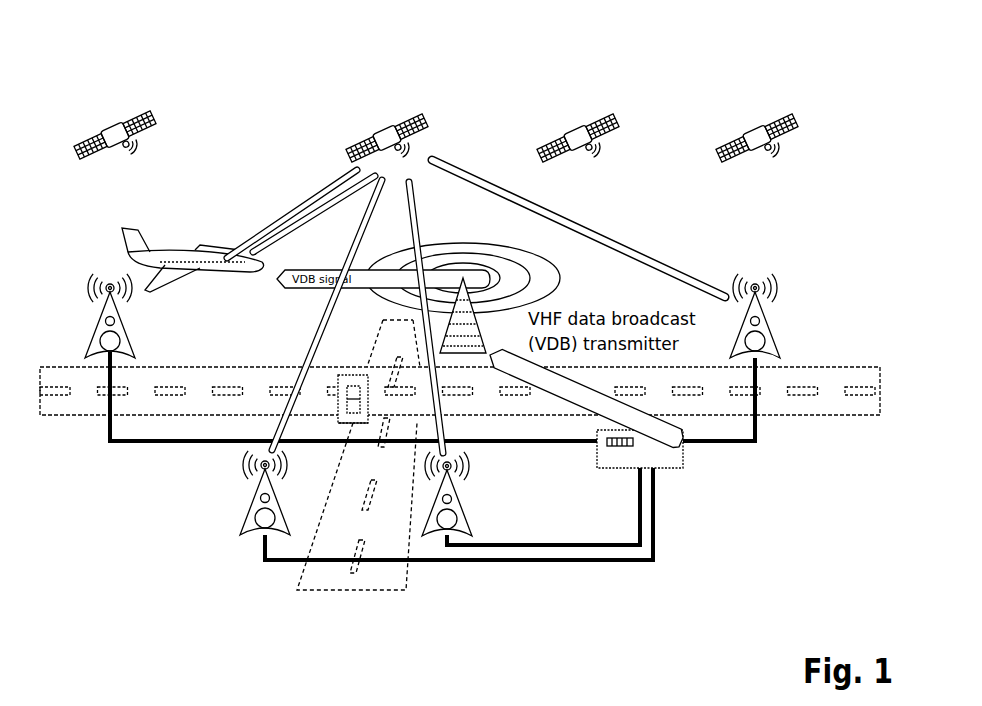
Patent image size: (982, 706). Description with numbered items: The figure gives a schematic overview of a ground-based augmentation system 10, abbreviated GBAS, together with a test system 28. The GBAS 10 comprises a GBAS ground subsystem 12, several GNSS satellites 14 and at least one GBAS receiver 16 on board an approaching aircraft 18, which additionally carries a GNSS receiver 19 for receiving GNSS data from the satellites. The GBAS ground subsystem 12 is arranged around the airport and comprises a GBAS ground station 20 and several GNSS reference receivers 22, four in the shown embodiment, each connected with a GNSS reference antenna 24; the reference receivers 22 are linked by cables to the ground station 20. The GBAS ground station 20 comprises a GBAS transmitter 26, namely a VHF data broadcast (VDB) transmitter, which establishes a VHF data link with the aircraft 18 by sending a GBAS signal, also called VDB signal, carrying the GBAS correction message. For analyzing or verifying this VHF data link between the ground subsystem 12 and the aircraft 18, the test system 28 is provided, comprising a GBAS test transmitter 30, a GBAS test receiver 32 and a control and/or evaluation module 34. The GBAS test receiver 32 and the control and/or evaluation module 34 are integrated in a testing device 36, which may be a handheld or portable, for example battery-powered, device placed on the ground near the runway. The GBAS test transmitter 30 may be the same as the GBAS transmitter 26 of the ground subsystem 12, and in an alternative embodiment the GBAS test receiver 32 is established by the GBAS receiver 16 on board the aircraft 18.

The ground-based augmentation system 10 is at (124, 71).
The GBAS ground subsystem 12 is at (664, 240).
The GNSS satellites 14 is at (85, 148).
The GBAS receiver 16 is at (189, 235).
The aircraft 18 is at (255, 248).
The GNSS receiver 19 is at (140, 229).
The GBAS ground station 20 is at (662, 472).
The GNSS reference receivers 22 is at (90, 345).
The GNSS reference antennas 24 is at (108, 284).
The GBAS transmitter 26 is at (440, 416).
The test system 28 is at (282, 101).
The GBAS test transmitter 30 is at (185, 230).
The GBAS test receiver 32 is at (362, 376).
The control and/or evaluation module 34 is at (348, 425).
The testing device 36 is at (345, 378).